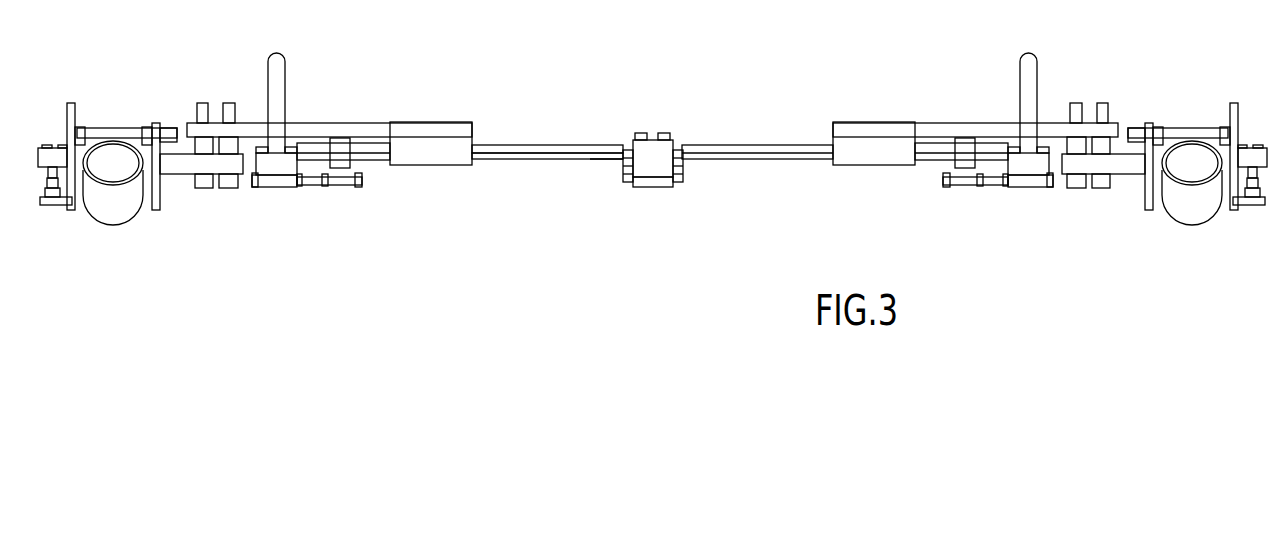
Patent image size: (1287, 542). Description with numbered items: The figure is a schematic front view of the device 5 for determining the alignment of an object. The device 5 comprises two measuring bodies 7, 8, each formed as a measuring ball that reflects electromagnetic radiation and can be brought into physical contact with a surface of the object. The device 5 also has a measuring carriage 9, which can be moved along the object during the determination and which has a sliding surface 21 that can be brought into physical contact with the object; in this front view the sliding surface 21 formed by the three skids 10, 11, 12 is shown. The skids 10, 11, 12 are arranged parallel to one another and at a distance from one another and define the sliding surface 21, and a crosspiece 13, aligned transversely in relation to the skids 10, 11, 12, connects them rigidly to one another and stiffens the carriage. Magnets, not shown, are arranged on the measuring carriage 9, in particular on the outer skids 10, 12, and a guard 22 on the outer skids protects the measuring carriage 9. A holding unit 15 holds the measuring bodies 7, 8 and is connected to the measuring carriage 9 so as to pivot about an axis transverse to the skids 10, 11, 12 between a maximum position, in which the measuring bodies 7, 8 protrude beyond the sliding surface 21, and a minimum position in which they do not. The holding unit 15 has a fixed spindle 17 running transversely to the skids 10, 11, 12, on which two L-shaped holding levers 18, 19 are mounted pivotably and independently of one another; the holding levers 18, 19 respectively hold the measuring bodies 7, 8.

The device 5 is at (658, 100).
The measuring body 7 is at (119, 213).
The measuring body 8 is at (1177, 210).
The measuring carriage 9 is at (705, 143).
The skid 10 is at (280, 165).
The skid 11 is at (645, 163).
The skid 12 is at (1038, 163).
The crosspiece 13 is at (500, 148).
The holding unit 15 is at (568, 162).
The fixed spindle 17 is at (610, 155).
The holding lever 18 is at (427, 152).
The holding lever 19 is at (882, 150).
The sliding surface 21 is at (285, 190).
The guard 22 is at (280, 75).